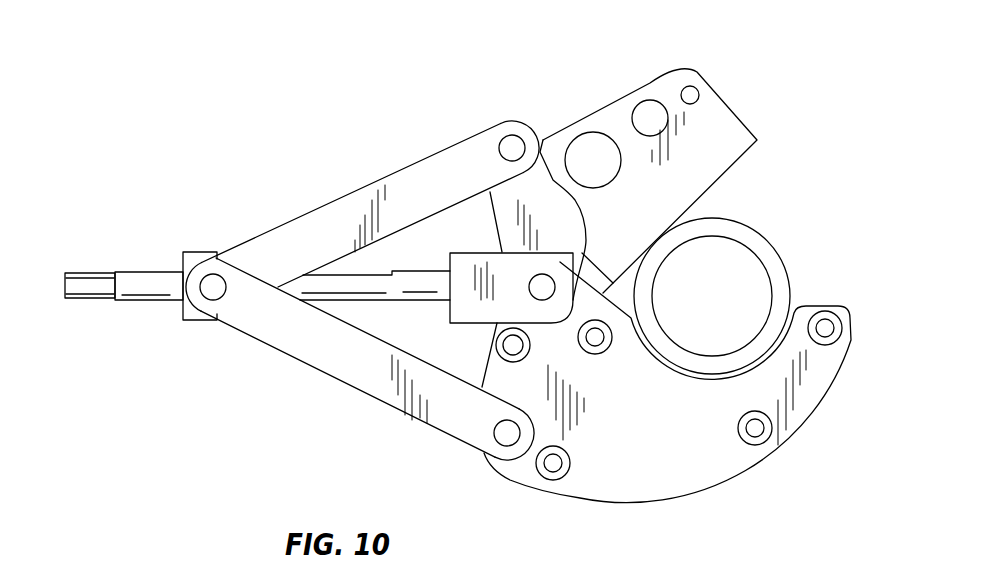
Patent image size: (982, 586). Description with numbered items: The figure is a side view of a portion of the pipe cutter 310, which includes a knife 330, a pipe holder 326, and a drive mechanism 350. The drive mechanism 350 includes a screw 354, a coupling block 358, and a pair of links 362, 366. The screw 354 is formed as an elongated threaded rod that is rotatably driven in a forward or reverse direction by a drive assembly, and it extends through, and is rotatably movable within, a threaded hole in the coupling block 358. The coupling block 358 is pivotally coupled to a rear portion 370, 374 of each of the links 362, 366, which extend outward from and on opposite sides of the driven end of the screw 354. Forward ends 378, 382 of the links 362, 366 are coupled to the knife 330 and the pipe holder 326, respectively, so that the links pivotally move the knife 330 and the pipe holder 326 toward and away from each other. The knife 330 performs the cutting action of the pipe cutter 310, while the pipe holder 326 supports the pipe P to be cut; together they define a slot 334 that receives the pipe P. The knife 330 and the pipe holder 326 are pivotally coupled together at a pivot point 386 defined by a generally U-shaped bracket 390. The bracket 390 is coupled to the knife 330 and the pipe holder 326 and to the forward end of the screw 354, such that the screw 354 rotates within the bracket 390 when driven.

The pipe cutter 310 is at (245, 105).
The pipe holder 326 is at (687, 462).
The knife 330 is at (650, 82).
The slot 334 is at (763, 218).
The pipe P is at (783, 263).
The drive mechanism 350 is at (297, 375).
The screw 354 is at (85, 272).
The coupling block 358 is at (190, 325).
The link 362 is at (340, 208).
The link 366 is at (388, 387).
The rear portion 370 is at (235, 257).
The rear portion 374 is at (212, 308).
The forward end 378 is at (508, 130).
The forward end 382 is at (488, 453).
The pivot point 386 is at (544, 284).
The bracket 390 is at (463, 263).